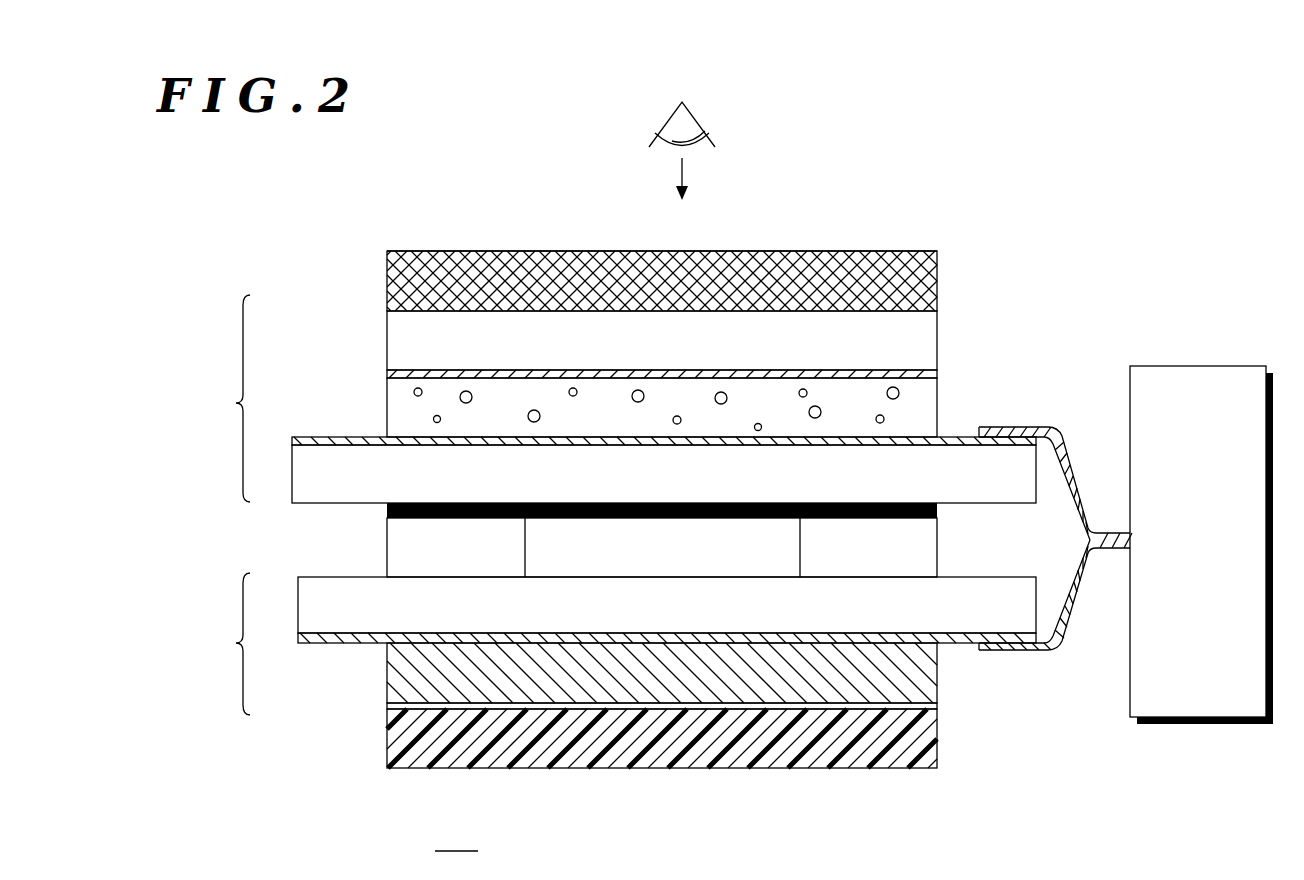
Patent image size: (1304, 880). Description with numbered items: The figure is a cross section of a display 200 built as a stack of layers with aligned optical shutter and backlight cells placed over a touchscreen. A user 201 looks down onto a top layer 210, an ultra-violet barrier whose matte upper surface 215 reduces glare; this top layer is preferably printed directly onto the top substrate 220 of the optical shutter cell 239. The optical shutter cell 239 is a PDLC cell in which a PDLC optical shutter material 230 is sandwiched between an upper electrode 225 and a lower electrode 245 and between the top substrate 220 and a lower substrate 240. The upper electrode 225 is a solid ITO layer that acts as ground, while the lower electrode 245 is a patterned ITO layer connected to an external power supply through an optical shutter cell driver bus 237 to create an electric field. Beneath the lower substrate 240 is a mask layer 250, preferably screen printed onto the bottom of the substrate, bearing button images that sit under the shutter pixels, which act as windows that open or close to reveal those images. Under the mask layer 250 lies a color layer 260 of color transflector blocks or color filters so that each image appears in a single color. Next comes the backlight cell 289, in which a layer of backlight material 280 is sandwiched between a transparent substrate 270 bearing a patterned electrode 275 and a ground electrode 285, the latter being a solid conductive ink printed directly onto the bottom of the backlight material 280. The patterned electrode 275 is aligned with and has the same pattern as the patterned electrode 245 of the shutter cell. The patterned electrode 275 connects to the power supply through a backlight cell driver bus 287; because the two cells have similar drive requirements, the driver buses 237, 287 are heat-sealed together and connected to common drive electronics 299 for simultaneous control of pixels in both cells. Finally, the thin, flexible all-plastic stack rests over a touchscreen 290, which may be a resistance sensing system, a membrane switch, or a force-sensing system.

The display 200 is at (456, 838).
The user 201 is at (702, 108).
The top layer 210 is at (388, 282).
The matte upper surface 215 is at (420, 240).
The top substrate 220 is at (388, 339).
The upper electrode 225 is at (388, 377).
The PDLC optical shutter material 230 is at (388, 413).
The optical shutter cell driver bus 237 is at (1038, 426).
The optical shutter cell 239 is at (219, 398).
The lower substrate 240 is at (305, 498).
The lower electrode 245 is at (298, 440).
The mask layer 250 is at (388, 514).
The color layer 260 is at (388, 558).
The transparent substrate 270 is at (303, 590).
The patterned electrode 275 is at (328, 646).
The backlight material 280 is at (388, 672).
The ground electrode 285 is at (388, 706).
The backlight cell driver bus 287 is at (1035, 652).
The backlight cell 289 is at (219, 644).
The touchscreen 290 is at (388, 737).
The drive electronics 299 is at (1197, 366).